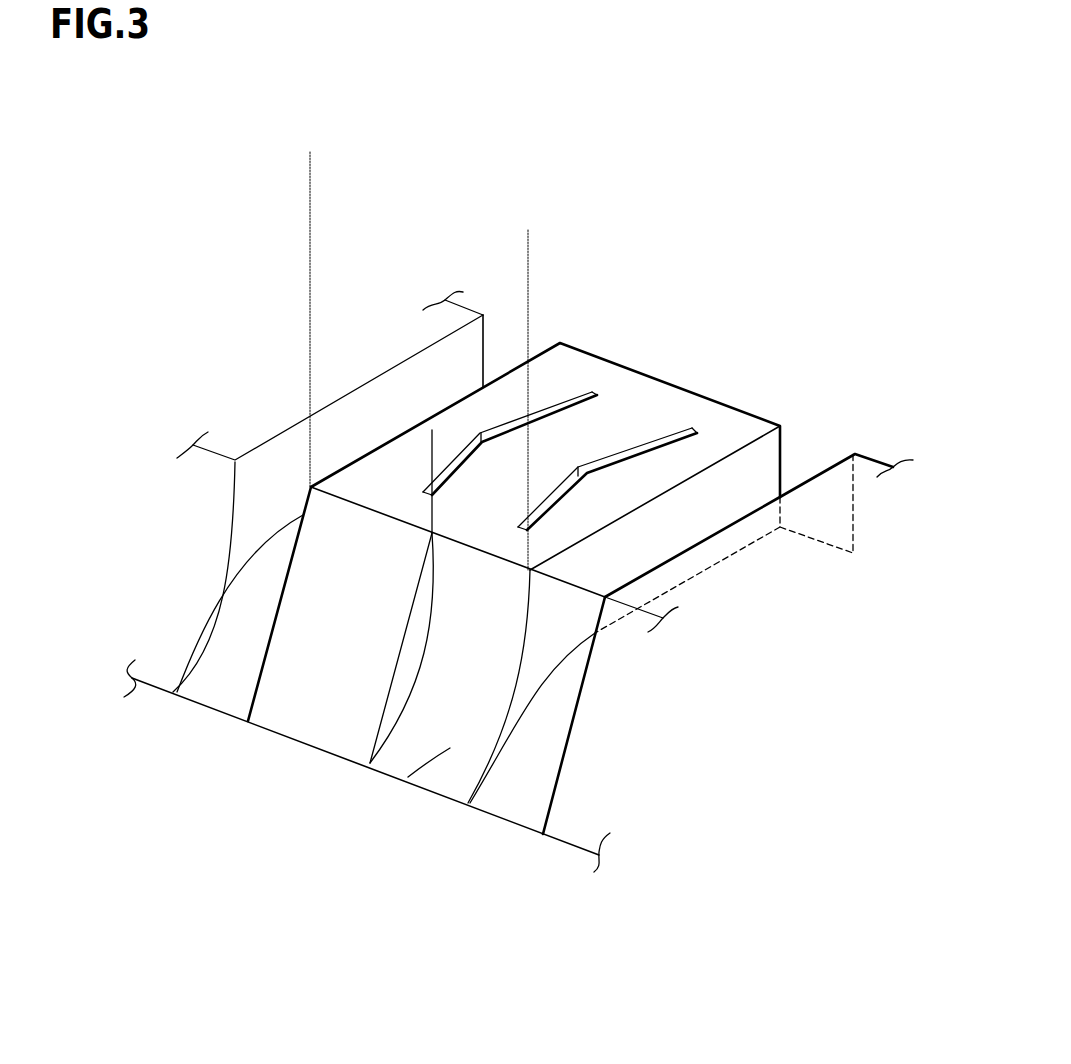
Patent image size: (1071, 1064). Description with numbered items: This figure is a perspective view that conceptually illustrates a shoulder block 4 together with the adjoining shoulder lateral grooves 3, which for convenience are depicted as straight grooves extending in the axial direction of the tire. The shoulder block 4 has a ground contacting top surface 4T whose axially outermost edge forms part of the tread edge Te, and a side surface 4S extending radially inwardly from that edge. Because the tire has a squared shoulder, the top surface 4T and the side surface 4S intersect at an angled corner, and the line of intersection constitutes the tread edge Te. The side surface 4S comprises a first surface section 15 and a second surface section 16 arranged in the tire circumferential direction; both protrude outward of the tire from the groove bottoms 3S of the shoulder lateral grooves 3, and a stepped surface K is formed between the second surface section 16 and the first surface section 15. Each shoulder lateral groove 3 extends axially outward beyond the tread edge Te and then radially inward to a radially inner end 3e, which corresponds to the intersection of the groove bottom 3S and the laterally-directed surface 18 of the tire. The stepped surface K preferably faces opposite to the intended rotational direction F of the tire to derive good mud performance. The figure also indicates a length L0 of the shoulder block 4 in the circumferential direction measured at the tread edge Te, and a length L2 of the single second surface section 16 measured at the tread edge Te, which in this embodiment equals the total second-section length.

The shoulder block 4 is at (712, 383).
The ground contacting top surface 4T is at (645, 398).
The side surface 4S is at (400, 887).
The shoulder lateral groove 3 is at (312, 742).
The groove bottom 3S is at (532, 718).
The radially inner end 3e is at (200, 704).
The first surface section 15 is at (317, 710).
The second surface section 16 is at (398, 688).
The laterally-directed surface 18 is at (215, 786).
The stepped surface K is at (388, 773).
The tread edge Te is at (370, 508).
The length in the tire circumferential direction of the shoulder block L0 is at (527, 238).
The length in the tire circumferential direction of the second surface section L2 is at (528, 472).
The intended rotational direction F is at (562, 878).